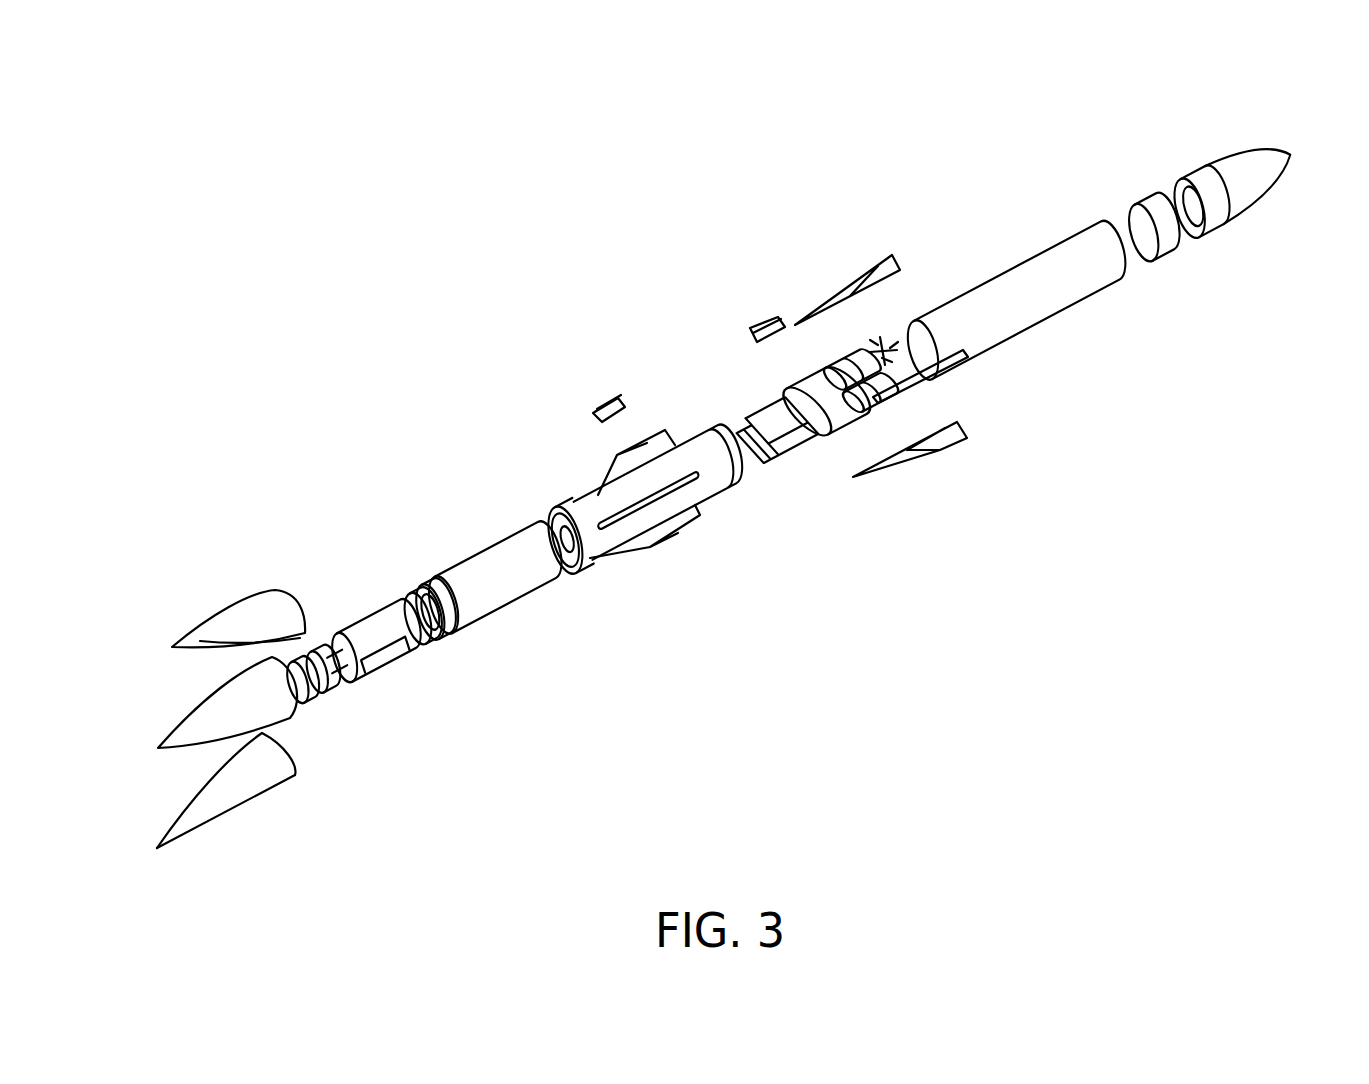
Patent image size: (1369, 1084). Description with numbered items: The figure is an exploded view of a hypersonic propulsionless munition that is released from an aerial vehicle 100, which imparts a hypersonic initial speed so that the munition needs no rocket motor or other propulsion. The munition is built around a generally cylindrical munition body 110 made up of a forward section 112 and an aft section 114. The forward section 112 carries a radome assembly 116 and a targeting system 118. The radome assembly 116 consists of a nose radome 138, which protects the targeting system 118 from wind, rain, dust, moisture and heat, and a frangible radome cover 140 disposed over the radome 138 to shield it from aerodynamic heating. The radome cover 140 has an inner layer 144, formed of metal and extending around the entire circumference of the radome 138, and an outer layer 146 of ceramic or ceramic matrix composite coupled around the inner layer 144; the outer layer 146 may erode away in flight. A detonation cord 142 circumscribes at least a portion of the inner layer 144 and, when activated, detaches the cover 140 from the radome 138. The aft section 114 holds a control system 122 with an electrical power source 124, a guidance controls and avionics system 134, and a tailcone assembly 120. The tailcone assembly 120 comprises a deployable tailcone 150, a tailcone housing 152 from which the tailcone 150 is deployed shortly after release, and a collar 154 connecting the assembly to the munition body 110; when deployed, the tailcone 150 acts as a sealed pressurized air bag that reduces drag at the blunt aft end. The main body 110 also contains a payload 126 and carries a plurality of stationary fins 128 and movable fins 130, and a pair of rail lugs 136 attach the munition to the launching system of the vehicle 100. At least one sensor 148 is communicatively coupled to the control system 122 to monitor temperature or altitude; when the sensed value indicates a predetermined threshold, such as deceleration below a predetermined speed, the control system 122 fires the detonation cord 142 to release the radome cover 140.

The aerial vehicle 100 is at (340, 318).
The munition body 110 is at (860, 215).
The forward section 112 is at (350, 485).
The aft section 114 is at (1043, 200).
The radome assembly 116 is at (150, 780).
The targeting system 118 is at (318, 608).
The tailcone assembly 120 is at (1200, 140).
The control system 122 is at (742, 400).
The electrical power source 124 is at (800, 362).
The payload 126 is at (598, 500).
The stationary fins 128 is at (698, 540).
The movable fins 130 is at (960, 447).
The guidance controls and avionics system 134 is at (793, 423).
The rail lugs 136 is at (603, 395).
The nose radome 138 is at (288, 728).
The frangible radome cover 140 is at (243, 590).
The detonation cord 142 is at (217, 820).
The inner layer 144 is at (262, 798).
The outer layer 146 is at (207, 632).
The sensor 148 is at (507, 587).
The deployable tailcone 150 is at (1268, 193).
The tailcone housing 152 is at (1222, 225).
The collar 154 is at (1172, 252).